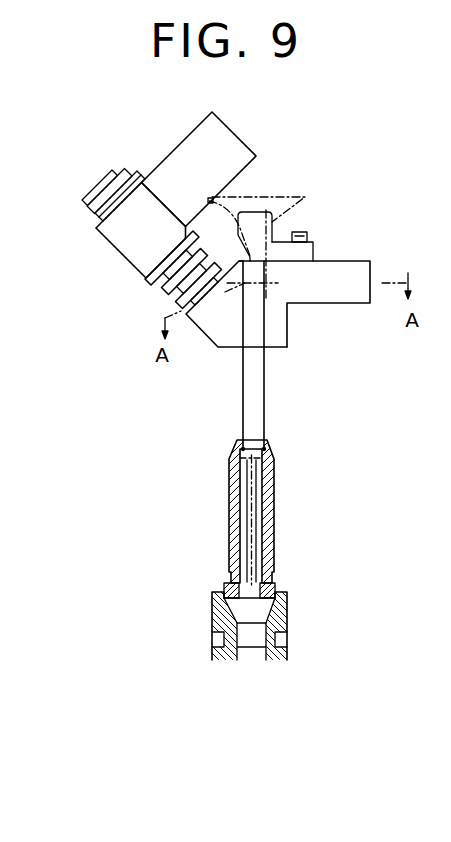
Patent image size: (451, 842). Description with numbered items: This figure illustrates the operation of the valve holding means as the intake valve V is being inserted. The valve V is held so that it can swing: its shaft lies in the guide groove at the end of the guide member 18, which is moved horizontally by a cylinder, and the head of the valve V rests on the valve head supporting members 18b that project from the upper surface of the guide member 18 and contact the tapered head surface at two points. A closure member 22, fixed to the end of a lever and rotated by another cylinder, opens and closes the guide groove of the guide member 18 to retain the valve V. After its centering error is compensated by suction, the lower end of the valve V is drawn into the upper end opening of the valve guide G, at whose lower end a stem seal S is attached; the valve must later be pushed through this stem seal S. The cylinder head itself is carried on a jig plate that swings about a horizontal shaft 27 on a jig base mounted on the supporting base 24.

The horizontal shaft 27 is at (170, 158).
The closure member 22 is at (226, 341).
The guide member 18 is at (343, 290).
The valve head supporting members 18b is at (260, 222).
The valve V is at (258, 413).
The valve guide G is at (230, 500).
The stem seal S is at (275, 584).
The supporting base 24 is at (292, 618).